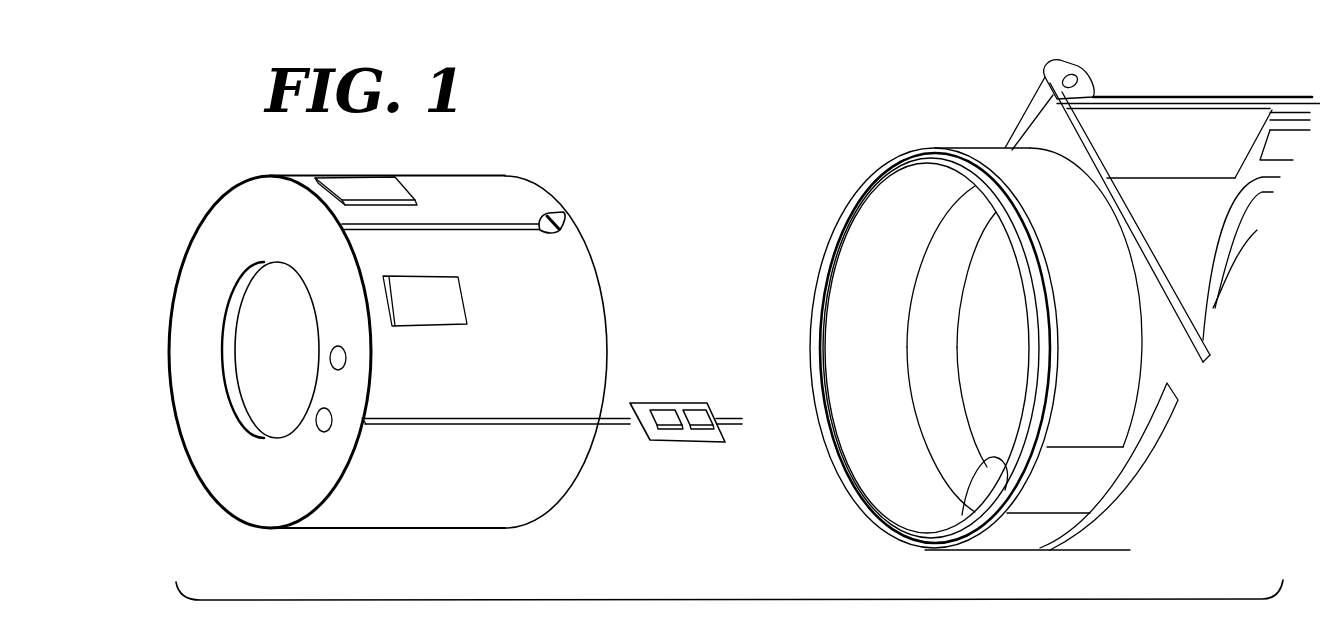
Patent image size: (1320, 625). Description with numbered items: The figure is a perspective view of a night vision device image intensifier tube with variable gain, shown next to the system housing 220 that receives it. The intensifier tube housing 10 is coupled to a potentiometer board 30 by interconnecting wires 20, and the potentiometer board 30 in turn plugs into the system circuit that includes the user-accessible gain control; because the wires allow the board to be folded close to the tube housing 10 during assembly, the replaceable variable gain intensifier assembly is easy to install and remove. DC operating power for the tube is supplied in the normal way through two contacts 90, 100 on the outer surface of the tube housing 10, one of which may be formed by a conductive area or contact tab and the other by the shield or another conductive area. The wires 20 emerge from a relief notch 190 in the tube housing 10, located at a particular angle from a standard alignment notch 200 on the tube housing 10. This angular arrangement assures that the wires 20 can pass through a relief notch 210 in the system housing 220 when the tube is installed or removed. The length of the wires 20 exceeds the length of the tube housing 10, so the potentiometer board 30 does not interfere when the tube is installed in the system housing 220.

The intensifier tube housing 10 is at (523, 196).
The interconnecting wires 20 is at (615, 425).
The potentiometer board 30 is at (677, 403).
The contact 90 is at (383, 185).
The contact 100 is at (448, 305).
The relief notch 190 is at (363, 426).
The alignment notch 200 is at (565, 214).
The relief notch 210 is at (967, 483).
The system housing 220 is at (990, 155).